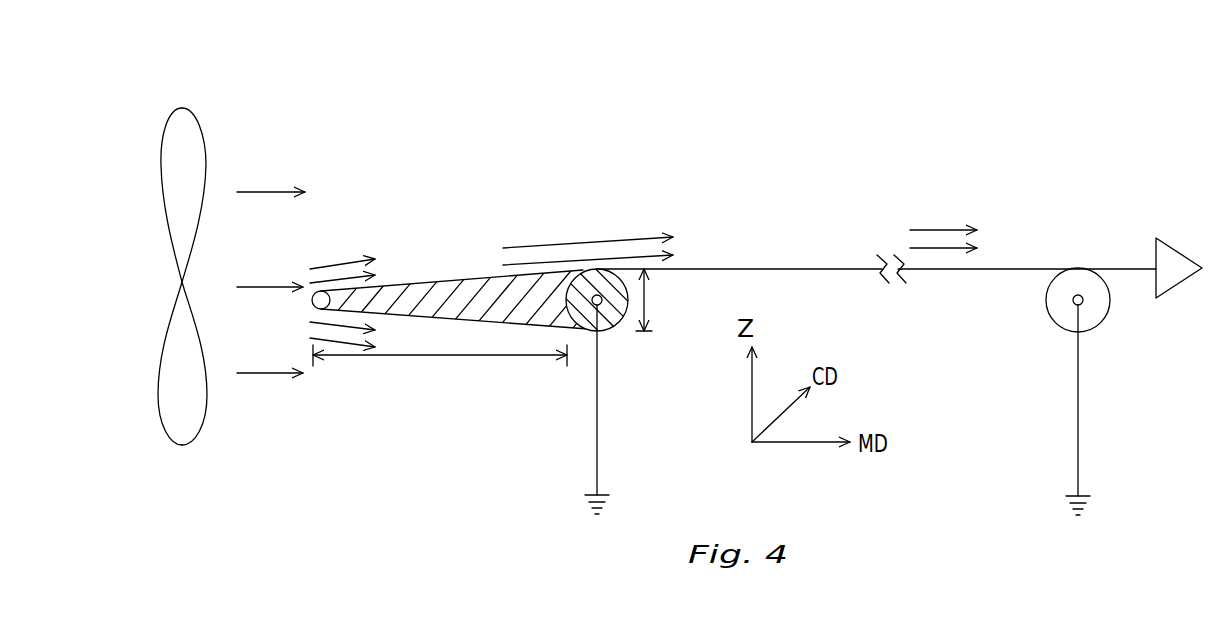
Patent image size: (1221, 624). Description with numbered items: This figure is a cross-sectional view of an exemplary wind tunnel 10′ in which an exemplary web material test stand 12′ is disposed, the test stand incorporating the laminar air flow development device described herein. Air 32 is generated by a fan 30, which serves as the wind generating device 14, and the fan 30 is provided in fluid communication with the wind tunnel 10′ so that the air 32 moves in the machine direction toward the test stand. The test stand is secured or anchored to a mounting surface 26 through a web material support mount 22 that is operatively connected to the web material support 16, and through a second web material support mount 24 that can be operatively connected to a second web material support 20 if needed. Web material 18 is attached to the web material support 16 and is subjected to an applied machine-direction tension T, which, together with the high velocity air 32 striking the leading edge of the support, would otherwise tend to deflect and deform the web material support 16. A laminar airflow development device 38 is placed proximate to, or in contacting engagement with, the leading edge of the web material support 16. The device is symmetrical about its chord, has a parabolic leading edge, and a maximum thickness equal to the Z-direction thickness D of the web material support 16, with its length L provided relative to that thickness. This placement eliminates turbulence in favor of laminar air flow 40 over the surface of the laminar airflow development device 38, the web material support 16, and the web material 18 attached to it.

The wind tunnel 10′ is at (905, 113).
The web material test stand 12′ is at (1042, 230).
The wind generating device 14 is at (205, 102).
The web material support 16 is at (617, 326).
The web material 18 is at (780, 268).
The second web material support 20 is at (1100, 312).
The web material support mount 22 is at (599, 447).
The second web material support mount 24 is at (1079, 447).
The mounting surface 26 is at (600, 494).
The fan 30 is at (200, 437).
The air 32 is at (237, 163).
The laminar airflow development device 38 is at (456, 303).
The laminar air flow 40 is at (303, 360).